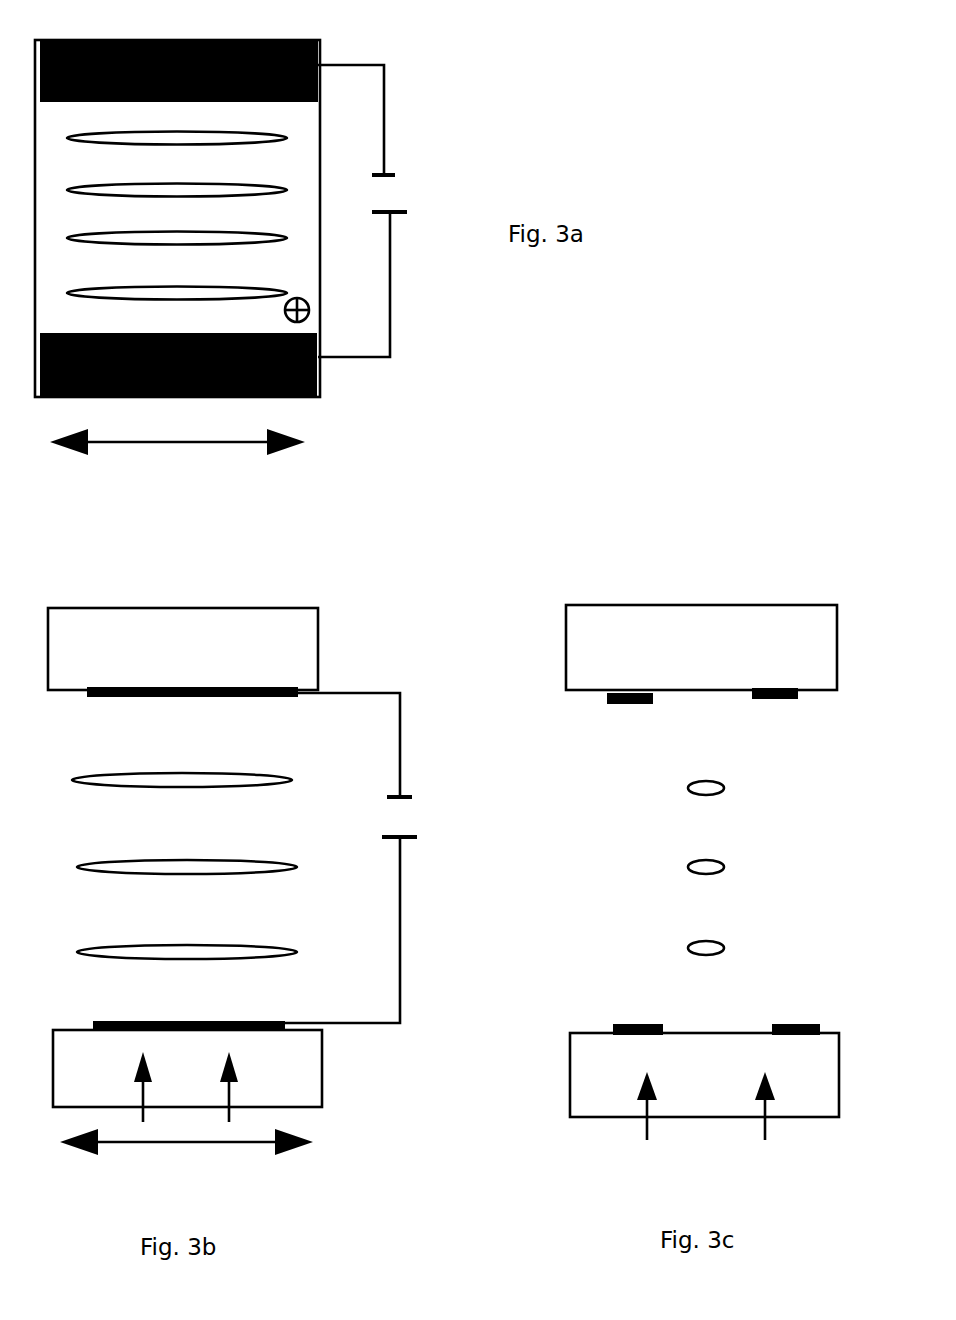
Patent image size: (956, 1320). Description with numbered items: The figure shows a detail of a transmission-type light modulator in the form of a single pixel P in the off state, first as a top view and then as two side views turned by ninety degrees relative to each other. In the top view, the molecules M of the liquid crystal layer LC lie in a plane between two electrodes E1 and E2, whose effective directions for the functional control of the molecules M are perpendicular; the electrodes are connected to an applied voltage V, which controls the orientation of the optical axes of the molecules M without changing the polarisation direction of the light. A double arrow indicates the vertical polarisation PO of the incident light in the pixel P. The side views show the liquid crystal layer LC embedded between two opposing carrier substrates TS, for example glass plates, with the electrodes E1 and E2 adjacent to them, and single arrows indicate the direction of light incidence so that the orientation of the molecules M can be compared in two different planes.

In FIG. 3A, the pixel P is at (430, 67).
In FIG. 3A, the first electrode E1 is at (199, 69).
In FIG. 3B, the first electrode E1 is at (298, 688).
In FIG. 3A, the second electrode E2 is at (198, 365).
In FIG. 3B, the second electrode E2 is at (285, 1030).
In FIG. 3A, the liquid crystal layer LC is at (177, 202).
In FIG. 3B, the liquid crystal layer LC is at (184, 843).
In FIG. 3C, the liquid crystal layer LC is at (706, 846).
In FIG. 3A, the molecules M is at (287, 238).
In FIG. 3B, the molecules M is at (297, 867).
In FIG. 3C, the molecules M is at (680, 873).
In FIG. 3A, the applied voltage V is at (380, 211).
In FIG. 3B, the applied voltage V is at (364, 858).
In FIG. 3A, the vertical polarisation PO is at (198, 442).
In FIG. 3B, the vertical polarisation PO is at (214, 1143).
In FIG. 3B, the carrier substrates TS is at (185, 857).
In FIG. 3C, the carrier substrates TS is at (702, 861).